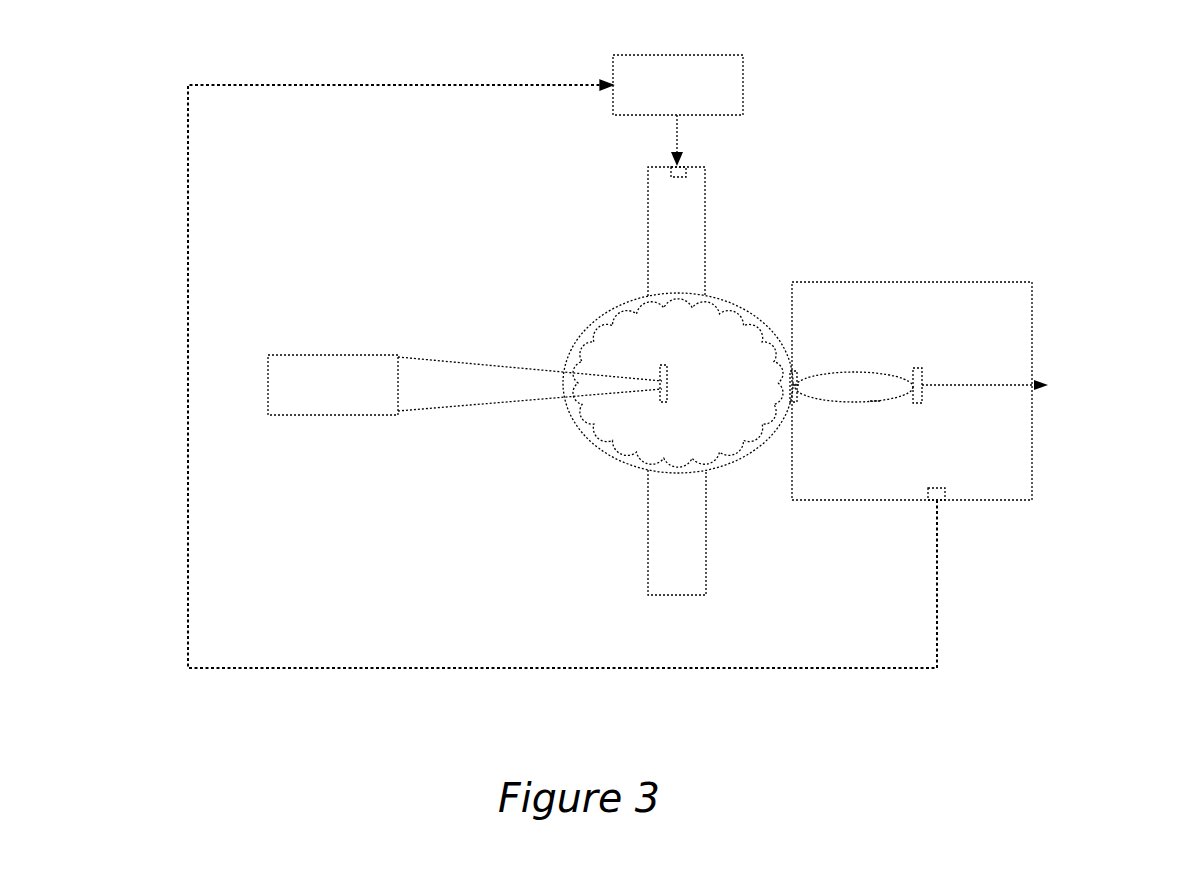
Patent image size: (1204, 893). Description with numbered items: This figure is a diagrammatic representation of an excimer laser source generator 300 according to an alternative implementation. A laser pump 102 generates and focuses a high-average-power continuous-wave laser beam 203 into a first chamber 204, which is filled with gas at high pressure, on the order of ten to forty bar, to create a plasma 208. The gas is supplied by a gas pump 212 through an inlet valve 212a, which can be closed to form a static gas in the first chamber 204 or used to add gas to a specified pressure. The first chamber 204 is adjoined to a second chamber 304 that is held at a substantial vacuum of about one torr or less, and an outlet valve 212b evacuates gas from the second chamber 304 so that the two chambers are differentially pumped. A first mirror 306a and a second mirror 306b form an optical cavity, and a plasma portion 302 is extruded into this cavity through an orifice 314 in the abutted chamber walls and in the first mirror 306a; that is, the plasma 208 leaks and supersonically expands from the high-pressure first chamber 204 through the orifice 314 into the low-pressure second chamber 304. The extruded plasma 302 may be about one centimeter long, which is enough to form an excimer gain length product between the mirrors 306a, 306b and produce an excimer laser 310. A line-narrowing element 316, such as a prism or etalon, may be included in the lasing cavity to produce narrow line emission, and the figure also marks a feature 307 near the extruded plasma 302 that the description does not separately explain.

The excimer laser source generator 300 is at (1092, 122).
The gas pump 212 is at (743, 92).
The inlet valve 212a is at (681, 170).
The outlet valve 212b is at (937, 500).
The first chamber 204 is at (648, 288).
The plasma 208 is at (690, 297).
The line-narrowing element 316 is at (665, 365).
The laser pump 102 is at (268, 360).
The cw laser beam 203 is at (545, 385).
The second chamber 304 is at (977, 290).
The extruded plasma portion 302 is at (873, 375).
The first mirror 306a is at (793, 375).
The second mirror 306b is at (922, 370).
The excimer laser 310 is at (995, 383).
The orifice 314 is at (795, 395).
The plasma boundary 307 is at (895, 403).